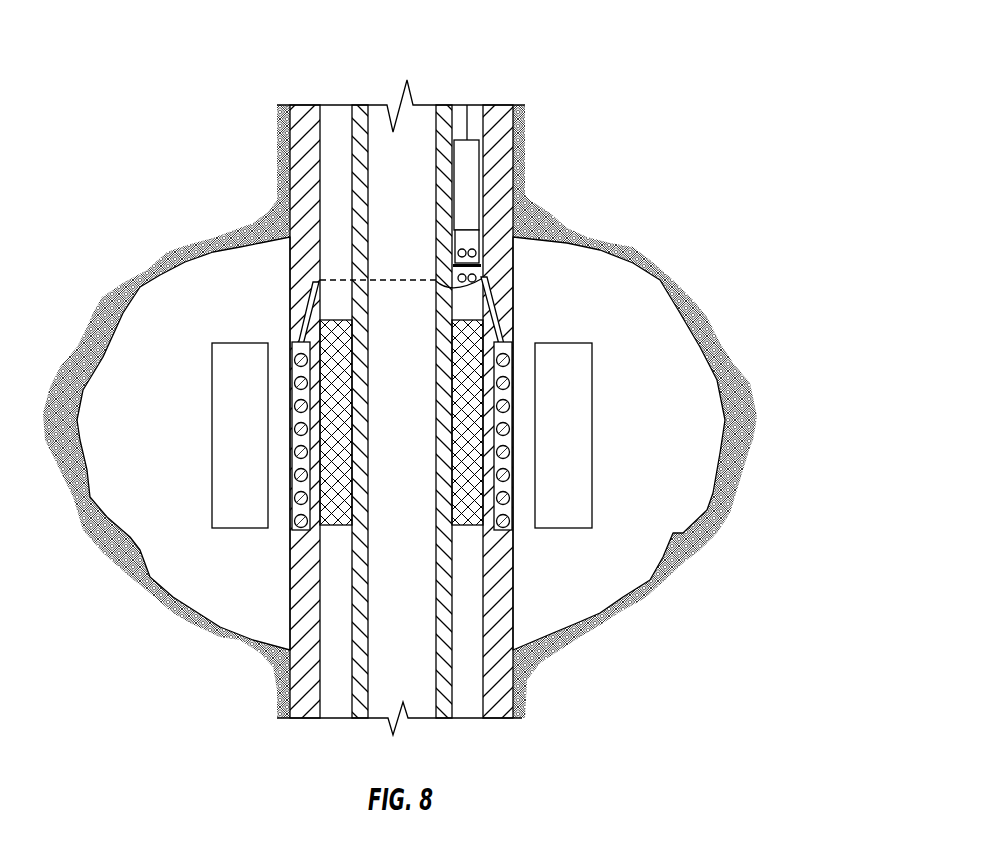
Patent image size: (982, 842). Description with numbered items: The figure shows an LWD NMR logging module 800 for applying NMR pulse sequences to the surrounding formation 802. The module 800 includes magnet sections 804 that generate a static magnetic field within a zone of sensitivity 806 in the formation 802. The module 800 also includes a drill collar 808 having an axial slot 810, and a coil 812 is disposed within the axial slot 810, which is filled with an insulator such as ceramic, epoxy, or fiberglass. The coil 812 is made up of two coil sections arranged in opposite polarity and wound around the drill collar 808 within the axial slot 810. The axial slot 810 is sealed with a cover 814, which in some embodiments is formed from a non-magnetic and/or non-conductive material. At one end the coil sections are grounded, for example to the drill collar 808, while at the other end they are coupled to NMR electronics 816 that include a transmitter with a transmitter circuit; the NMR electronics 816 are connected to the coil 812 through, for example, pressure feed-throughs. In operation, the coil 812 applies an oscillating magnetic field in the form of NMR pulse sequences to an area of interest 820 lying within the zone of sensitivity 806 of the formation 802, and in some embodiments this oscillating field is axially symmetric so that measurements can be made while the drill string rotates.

The LWD NMR logging module 800 is at (585, 57).
The formation 802 is at (238, 578).
The magnet sections 804 is at (340, 472).
The zone of sensitivity 806 is at (213, 252).
The drill collar 808 is at (513, 192).
The axial slot 810 is at (293, 345).
The coil 812 is at (296, 400).
The cover 814 is at (296, 453).
The NMR electronics 816 is at (467, 202).
The area of interest 820 is at (212, 483).